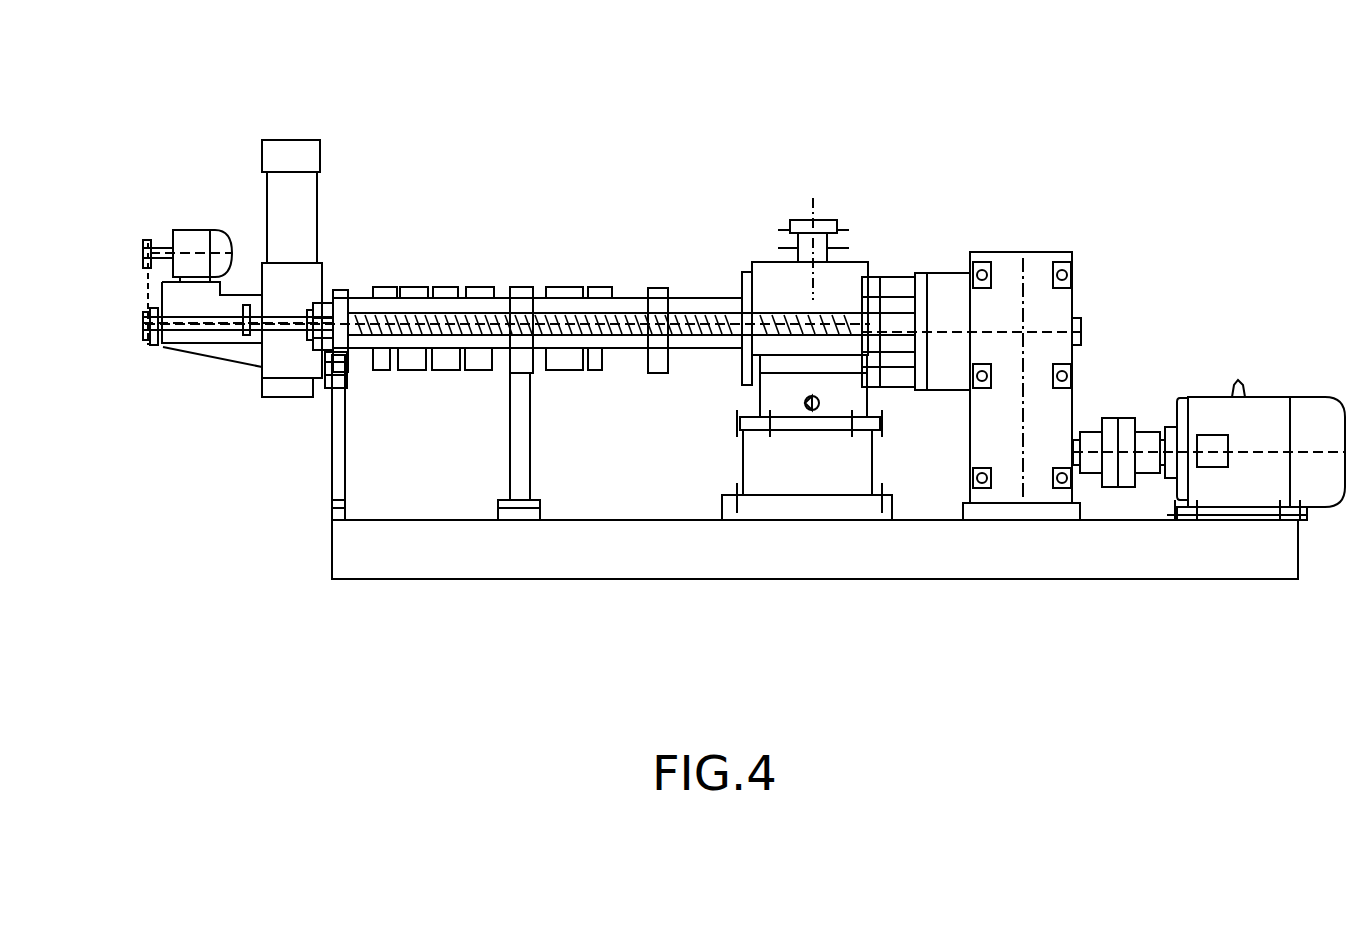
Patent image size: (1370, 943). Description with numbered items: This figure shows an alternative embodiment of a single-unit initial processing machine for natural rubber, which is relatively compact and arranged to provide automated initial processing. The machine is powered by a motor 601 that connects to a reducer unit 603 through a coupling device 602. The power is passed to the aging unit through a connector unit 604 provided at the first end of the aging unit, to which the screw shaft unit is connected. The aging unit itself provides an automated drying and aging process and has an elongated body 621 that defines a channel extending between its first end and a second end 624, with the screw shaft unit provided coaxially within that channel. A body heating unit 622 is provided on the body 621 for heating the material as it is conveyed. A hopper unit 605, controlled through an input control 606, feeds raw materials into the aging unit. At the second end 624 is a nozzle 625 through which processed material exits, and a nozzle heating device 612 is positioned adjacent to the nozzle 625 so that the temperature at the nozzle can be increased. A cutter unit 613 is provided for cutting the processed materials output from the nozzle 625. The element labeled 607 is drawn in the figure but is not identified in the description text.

The motor 601 is at (1253, 423).
The coupling device 602 is at (1127, 475).
The reducer unit 603 is at (1042, 413).
The connector unit 604 is at (915, 312).
The hopper unit 605 is at (845, 300).
The input control 606 is at (837, 240).
The vent block 607 is at (800, 313).
The nozzle heating device 612 is at (323, 297).
The cutter unit 613 is at (310, 333).
The elongated body 621 is at (622, 292).
The body heating unit 622 is at (557, 290).
The second end 624 is at (343, 297).
The nozzle 625 is at (322, 296).